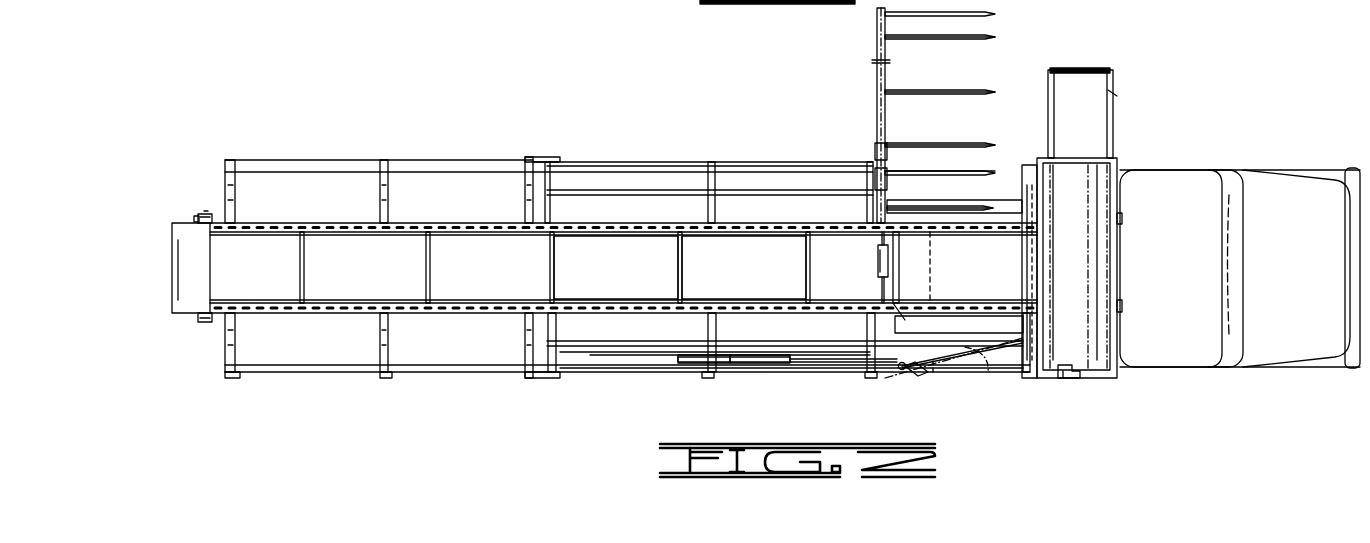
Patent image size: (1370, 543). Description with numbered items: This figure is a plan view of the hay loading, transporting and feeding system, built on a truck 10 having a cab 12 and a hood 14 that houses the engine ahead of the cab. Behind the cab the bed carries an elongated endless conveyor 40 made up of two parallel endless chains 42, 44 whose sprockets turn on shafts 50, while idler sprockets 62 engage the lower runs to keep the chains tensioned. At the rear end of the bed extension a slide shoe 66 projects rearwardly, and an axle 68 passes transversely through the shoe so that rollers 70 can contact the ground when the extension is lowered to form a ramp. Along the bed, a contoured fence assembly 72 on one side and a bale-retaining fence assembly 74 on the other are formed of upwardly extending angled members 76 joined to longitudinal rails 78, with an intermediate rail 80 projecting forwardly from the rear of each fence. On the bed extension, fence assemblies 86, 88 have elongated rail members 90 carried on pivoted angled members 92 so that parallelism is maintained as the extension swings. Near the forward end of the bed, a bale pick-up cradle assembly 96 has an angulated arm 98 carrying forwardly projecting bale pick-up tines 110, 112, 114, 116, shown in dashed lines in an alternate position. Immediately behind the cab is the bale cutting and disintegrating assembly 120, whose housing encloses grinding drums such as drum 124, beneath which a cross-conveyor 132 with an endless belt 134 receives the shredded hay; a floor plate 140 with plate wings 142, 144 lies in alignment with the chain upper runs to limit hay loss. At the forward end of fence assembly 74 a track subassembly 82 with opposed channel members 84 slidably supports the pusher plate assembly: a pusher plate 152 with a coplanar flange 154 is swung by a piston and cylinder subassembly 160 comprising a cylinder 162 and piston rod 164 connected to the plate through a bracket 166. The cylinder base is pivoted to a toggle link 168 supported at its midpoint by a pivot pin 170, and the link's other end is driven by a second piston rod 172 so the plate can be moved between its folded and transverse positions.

The truck 10 is at (1265, 157).
The cab 12 is at (1182, 262).
The hood 14 is at (1302, 264).
The endless conveyor 40 is at (487, 240).
The endless chain 42 is at (362, 235).
The endless chain 44 is at (345, 303).
The shaft 50 is at (805, 258).
The idler sprocket 62 is at (680, 300).
The slide shoe 66 is at (185, 292).
The axle 68 is at (202, 214).
The roller 70 is at (197, 222).
The contoured fence assembly 72 is at (632, 160).
The bale-retaining fence assembly 74 is at (626, 375).
The angled member 76 is at (712, 180).
The rail 78 is at (815, 162).
The intermediate rail 80 is at (592, 190).
The track subassembly 82 is at (778, 372).
The channel member 84 is at (752, 363).
The fence assembly 86 is at (300, 160).
The fence assembly 88 is at (295, 372).
The elongated rail member 90 is at (428, 163).
The angled member 92 is at (235, 190).
The bale pick-up cradle assembly 96 is at (862, 110).
The angulated arm 98 is at (870, 128).
The bale pick-up tine 110 is at (965, 175).
The bale pick-up tine 112 is at (950, 42).
The bale pick-up tine 114 is at (945, 92).
The bale pick-up tine 116 is at (955, 143).
The bale cutting and disintegrating assembly 120 is at (1114, 163).
The grinding drum 124 is at (1060, 372).
The cross-conveyor 132 is at (1118, 92).
The endless belt 134 is at (1083, 72).
The floor plate 140 is at (998, 273).
The plate wing 142 is at (890, 203).
The plate wing 144 is at (878, 272).
The pusher plate 152 is at (740, 370).
The flange 154 is at (857, 358).
The piston and cylinder subassembly 160 is at (905, 380).
The cylinder 162 is at (934, 375).
The piston rod 164 is at (968, 374).
The bracket 166 is at (1020, 336).
The toggle link 168 is at (900, 372).
The pivot pin 170 is at (902, 366).
The piston rod 172 is at (850, 362).